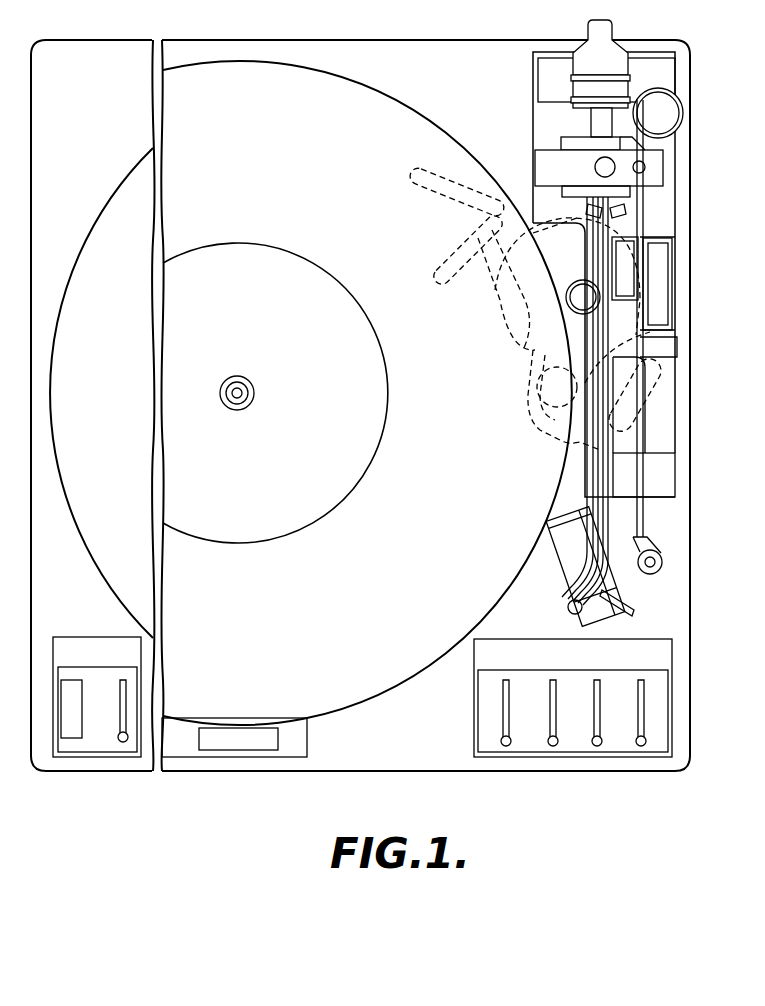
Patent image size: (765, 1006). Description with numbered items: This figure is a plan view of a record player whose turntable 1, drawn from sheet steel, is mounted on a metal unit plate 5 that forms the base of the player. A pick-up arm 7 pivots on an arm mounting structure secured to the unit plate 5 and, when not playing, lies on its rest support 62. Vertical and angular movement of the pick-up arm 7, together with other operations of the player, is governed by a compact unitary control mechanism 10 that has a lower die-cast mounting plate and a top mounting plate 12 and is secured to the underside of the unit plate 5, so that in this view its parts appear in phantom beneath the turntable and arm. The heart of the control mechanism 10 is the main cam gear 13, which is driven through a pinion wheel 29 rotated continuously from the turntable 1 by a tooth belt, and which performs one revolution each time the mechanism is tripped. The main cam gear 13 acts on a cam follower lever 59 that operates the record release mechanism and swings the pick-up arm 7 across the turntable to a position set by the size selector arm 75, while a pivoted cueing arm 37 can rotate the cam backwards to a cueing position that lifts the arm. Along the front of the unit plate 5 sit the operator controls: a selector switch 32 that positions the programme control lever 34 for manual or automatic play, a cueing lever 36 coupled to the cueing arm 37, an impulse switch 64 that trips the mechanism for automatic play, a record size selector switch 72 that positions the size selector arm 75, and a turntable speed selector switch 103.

The turntable 1 is at (303, 657).
The unit plate 5 is at (148, 750).
The pick-up arm 7 is at (600, 512).
The control mechanism 10 is at (538, 197).
The top mounting plate 12 is at (540, 428).
The main cam gear 13 is at (660, 292).
The pinion wheel 29 is at (535, 397).
The selector switch 32 is at (641, 746).
The programme control lever 34 is at (650, 392).
The cueing lever 36 is at (506, 746).
The cueing arm 37 is at (449, 272).
The cam follower lever 59 is at (410, 170).
The rest support 62 is at (615, 475).
The impulse switch 64 is at (553, 746).
The record size selector switch 72 is at (597, 746).
The size selector arm 75 is at (655, 208).
The turntable speed selector switch 103 is at (113, 720).